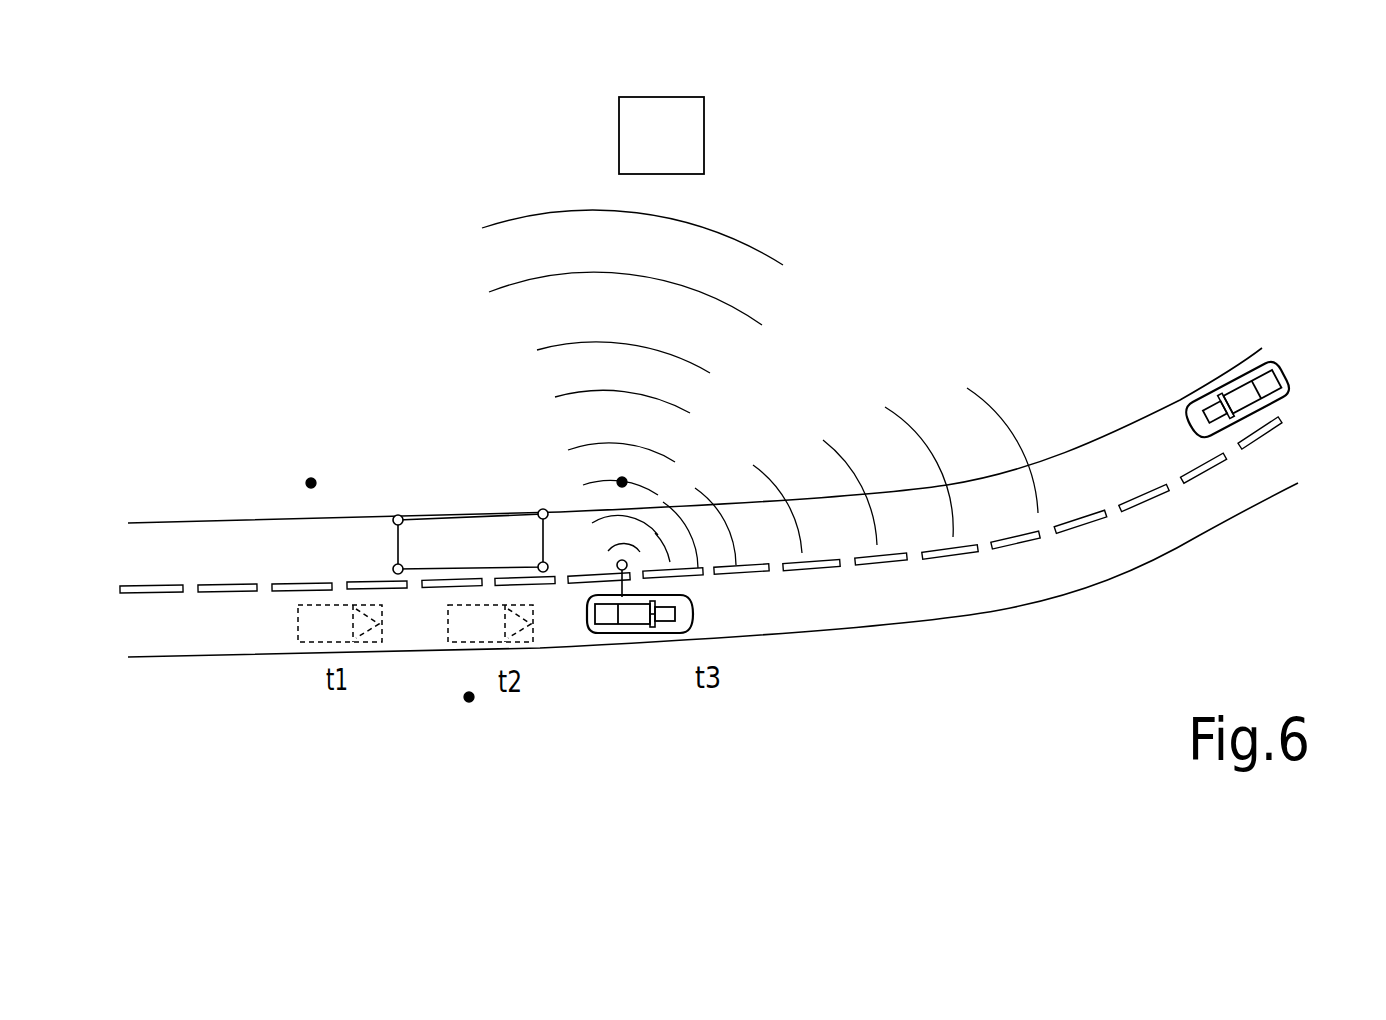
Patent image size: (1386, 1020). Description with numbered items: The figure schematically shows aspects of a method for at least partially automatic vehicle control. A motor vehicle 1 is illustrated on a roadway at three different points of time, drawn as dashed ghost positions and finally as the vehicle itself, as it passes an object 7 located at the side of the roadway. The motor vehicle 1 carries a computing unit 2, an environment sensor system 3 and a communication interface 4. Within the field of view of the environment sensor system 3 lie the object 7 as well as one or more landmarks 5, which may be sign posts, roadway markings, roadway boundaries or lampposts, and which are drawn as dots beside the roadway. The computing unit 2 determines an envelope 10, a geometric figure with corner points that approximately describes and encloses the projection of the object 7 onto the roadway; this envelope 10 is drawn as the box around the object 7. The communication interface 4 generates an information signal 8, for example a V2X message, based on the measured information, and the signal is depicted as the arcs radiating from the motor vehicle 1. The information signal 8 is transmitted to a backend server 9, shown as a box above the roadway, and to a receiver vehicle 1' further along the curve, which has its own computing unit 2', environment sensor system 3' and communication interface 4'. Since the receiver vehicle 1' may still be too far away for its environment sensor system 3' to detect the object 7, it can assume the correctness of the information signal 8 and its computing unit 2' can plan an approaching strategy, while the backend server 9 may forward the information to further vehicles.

The motor vehicle 1 is at (624, 643).
The receiver vehicle 1' is at (1266, 416).
The computing unit 2 is at (646, 666).
The environment sensor system 3 is at (646, 666).
The communication interface 4 is at (646, 666).
The computing unit 2' is at (1277, 485).
The environment sensor system 3' is at (1277, 485).
The communication interface 4' is at (1277, 485).
The landmark 5 is at (308, 483).
The object 7 is at (438, 541).
The information signal 8 is at (568, 388).
The backend server 9 is at (671, 150).
The envelope 10 is at (397, 548).